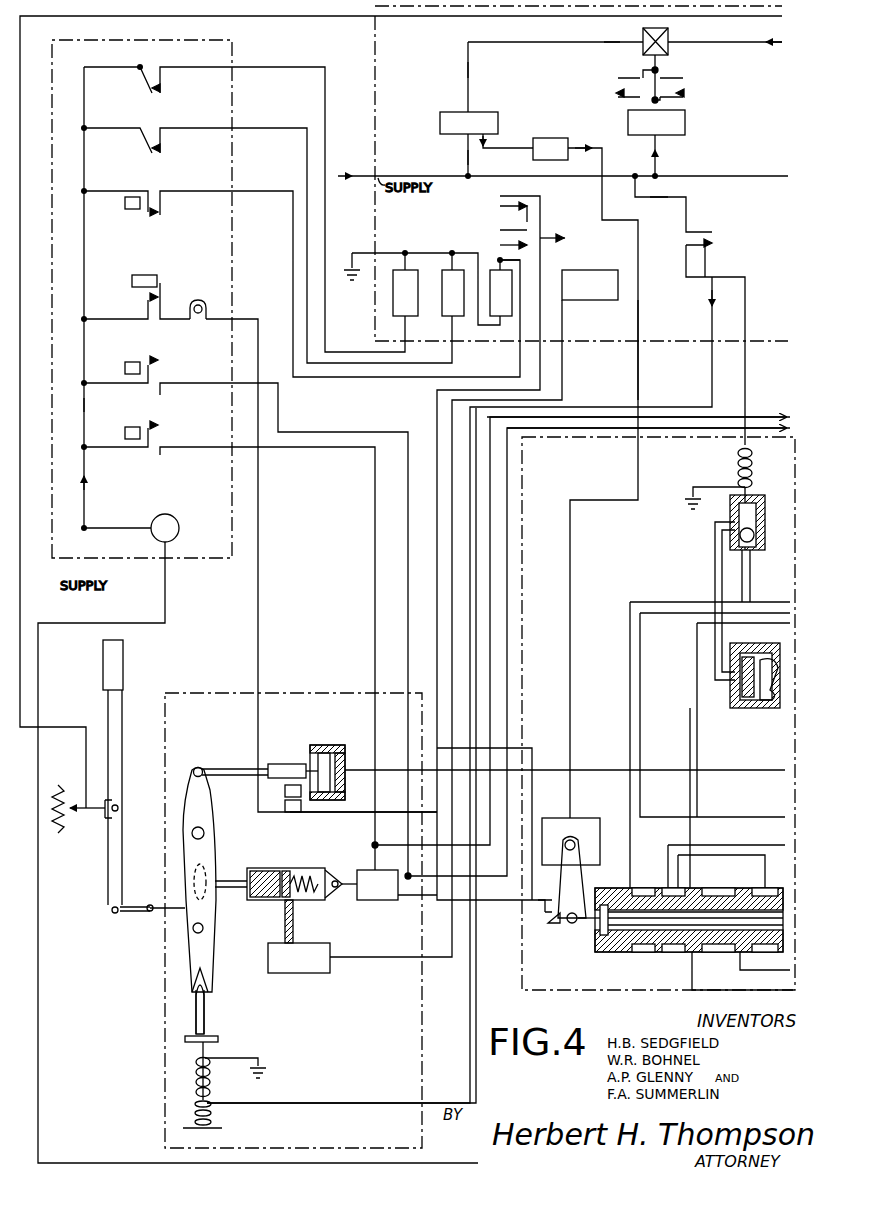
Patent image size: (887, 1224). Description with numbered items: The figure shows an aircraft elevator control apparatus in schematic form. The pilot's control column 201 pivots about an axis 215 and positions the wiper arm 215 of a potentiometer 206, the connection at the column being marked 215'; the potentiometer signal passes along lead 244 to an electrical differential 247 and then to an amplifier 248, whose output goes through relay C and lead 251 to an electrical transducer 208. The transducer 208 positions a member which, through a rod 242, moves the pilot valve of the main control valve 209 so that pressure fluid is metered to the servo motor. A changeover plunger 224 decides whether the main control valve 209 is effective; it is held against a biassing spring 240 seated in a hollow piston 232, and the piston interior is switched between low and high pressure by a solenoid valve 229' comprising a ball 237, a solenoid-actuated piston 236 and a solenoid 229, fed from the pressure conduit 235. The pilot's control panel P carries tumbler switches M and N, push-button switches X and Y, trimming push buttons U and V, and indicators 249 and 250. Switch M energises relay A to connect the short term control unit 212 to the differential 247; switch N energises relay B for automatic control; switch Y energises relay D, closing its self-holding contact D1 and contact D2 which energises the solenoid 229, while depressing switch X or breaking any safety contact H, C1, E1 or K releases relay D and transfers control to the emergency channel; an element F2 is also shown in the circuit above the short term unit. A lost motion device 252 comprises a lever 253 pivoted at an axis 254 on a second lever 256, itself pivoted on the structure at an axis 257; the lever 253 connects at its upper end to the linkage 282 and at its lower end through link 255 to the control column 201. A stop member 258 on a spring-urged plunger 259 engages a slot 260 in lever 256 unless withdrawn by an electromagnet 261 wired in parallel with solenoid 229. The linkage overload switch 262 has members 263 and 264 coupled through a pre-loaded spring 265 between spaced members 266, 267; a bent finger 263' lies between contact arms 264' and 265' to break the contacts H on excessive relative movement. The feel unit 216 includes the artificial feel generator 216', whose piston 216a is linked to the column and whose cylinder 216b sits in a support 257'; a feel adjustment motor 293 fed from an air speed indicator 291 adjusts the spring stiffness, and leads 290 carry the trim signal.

The control column 201 is at (122, 720).
The potentiometer 206 is at (60, 792).
The electrical transducer 208 is at (572, 820).
The main control valve 209 is at (688, 955).
The short term automatic control unit 212 is at (685, 128).
The pivot axis 215 is at (91, 863).
The contact 215' is at (134, 808).
The feel unit 216 is at (298, 924).
The artificial feel generator 216' is at (286, 874).
The piston 216a is at (285, 905).
The cylinder 216b is at (227, 892).
The plunger 224 is at (773, 645).
The solenoid 229 is at (718, 478).
The solenoid valve 229' is at (760, 548).
The hollow piston 232 is at (752, 708).
The pressure conduit 235 is at (786, 603).
The solenoid-actuated piston 236 is at (745, 478).
The ball 237 is at (740, 538).
The biassing spring 240 is at (742, 700).
The rod 242 is at (600, 933).
The lead 244 is at (366, 20).
The electrical differential 247 is at (668, 52).
The amplifier 248 is at (457, 118).
The indicator 249 is at (172, 517).
The indicator 250 is at (190, 304).
The lead 251 is at (638, 316).
The lost motion device 252 is at (182, 1005).
The lever 253 is at (188, 786).
The axis 254 is at (206, 833).
The link 255 is at (145, 915).
The second lever 256 is at (190, 940).
The axis 257 is at (223, 926).
The support 257' is at (338, 873).
The stop member 258 is at (207, 1022).
The plunger 259 is at (212, 1057).
The slot 260 is at (208, 975).
The electromagnet 261 is at (196, 1098).
The linkage overload switch 262 is at (312, 752).
The member 263 is at (341, 759).
The bent finger 263' is at (261, 787).
The member 264 is at (254, 762).
The contact arm 264' is at (329, 808).
The pre-loaded spring 265 is at (331, 739).
The contact arm 265' is at (259, 847).
The spaced member 266 is at (316, 800).
The spaced member 267 is at (332, 795).
The linkage 282 is at (588, 770).
The leads 290 is at (778, 417).
The air speed indicator 291 is at (578, 275).
The feel adjustment motor 293 is at (300, 973).
The pilot's control panel P is at (226, 50).
The tumbler switch M is at (244, 209).
The tumbler switch N is at (268, 245).
The push button switch Y is at (302, 284).
The push button switch X is at (260, 539).
The trimming push button U is at (246, 616).
The trimming push button V is at (229, 645).
The relay A is at (405, 284).
The relay B is at (453, 284).
The relay C is at (585, 478).
The relay D is at (505, 288).
The safety contact C1 is at (500, 206).
The self-holding relay contact D1 is at (500, 245).
The contacts E1 is at (563, 234).
The meter F2 is at (689, 32).
The contacts D2 is at (476, 639).
The contacts H is at (308, 800).
The safety contact K is at (549, 927).